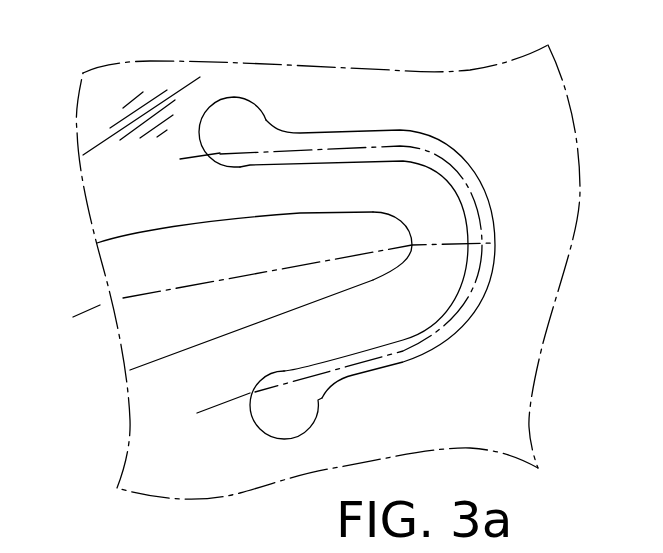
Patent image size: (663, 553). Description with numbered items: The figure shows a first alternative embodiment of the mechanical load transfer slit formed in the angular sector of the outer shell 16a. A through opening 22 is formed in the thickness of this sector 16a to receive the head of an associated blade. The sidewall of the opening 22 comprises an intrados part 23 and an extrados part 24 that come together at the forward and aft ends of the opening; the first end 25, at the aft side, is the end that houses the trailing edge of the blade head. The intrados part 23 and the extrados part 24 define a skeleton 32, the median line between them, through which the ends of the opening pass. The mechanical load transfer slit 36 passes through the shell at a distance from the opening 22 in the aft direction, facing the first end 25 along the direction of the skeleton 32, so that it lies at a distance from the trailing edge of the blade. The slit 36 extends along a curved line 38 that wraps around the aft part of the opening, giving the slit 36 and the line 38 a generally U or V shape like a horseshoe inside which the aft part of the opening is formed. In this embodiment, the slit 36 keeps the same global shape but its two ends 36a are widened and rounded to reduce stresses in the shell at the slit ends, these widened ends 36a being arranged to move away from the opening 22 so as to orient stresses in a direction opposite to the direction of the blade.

The angular sector of the outer shell 16a is at (270, 76).
The skeleton 32 is at (83, 310).
The opening 22 is at (296, 274).
The intrados part 23 is at (253, 323).
The extrados part 24 is at (182, 229).
The first end 25 is at (412, 247).
The mechanical load transfer slit 36 is at (453, 168).
The widened and rounded ends 36a is at (257, 120).
The curved line 38 is at (227, 407).